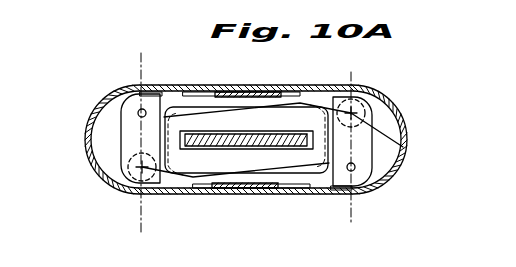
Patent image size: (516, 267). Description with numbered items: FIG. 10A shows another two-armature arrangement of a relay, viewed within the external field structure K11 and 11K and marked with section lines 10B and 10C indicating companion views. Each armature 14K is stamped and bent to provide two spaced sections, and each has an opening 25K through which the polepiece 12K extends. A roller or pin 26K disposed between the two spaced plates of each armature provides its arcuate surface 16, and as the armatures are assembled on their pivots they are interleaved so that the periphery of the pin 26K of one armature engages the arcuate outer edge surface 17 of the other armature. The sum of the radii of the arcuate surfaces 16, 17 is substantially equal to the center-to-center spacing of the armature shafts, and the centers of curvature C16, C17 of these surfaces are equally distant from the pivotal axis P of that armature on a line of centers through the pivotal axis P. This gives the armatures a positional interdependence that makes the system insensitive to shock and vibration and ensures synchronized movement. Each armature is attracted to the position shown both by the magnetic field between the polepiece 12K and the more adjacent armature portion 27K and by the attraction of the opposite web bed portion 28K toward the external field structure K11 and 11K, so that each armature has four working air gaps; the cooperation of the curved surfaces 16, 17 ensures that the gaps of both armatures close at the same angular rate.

The external field structure 11K is at (399, 121).
The armature 14K is at (193, 123).
The arcuate surface 16 is at (340, 103).
The pivotal axis P is at (138, 113).
The opening 25K is at (298, 169).
The polepiece 12K is at (222, 148).
The armature portion 27K is at (263, 133).
The external field structure K11 is at (236, 94).
The web bed portion 28K is at (197, 188).
The arcuate outer edge surface 17 is at (326, 94).
The roller or pin 26K is at (403, 147).
The center of curvature C17 is at (142, 60).
The center of curvature C16 is at (142, 165).
The section line 10B is at (103, 88).
The section line 10C is at (131, 44).